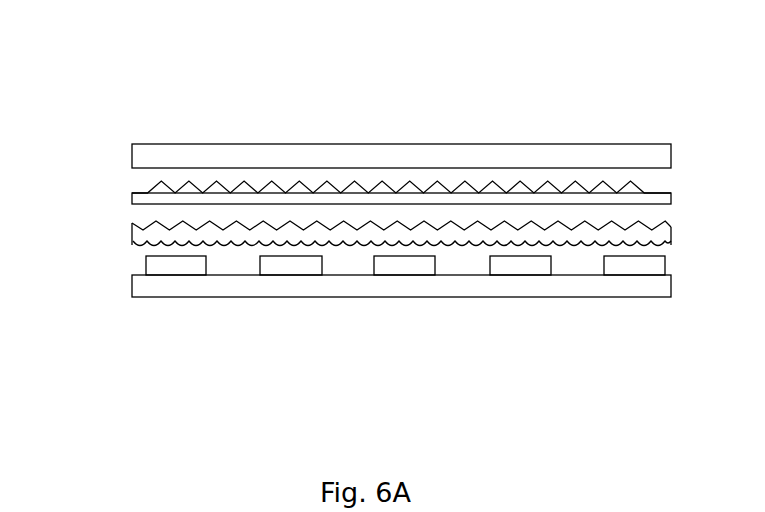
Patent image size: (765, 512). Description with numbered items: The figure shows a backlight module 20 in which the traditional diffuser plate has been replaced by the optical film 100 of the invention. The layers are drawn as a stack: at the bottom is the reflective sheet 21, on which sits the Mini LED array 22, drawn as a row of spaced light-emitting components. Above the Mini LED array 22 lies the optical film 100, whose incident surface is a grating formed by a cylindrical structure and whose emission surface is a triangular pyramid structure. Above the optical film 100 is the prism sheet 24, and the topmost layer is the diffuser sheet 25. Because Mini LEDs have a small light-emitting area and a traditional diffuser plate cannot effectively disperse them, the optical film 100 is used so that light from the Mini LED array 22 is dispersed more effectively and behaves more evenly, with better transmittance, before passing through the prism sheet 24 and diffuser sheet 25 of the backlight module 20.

The backlight module 20 is at (376, 88).
The diffuser sheet 25 is at (192, 145).
The prism sheet 24 is at (132, 196).
The optical film 100 is at (132, 230).
The Mini LED array 22 is at (146, 265).
The reflective sheet 21 is at (146, 298).